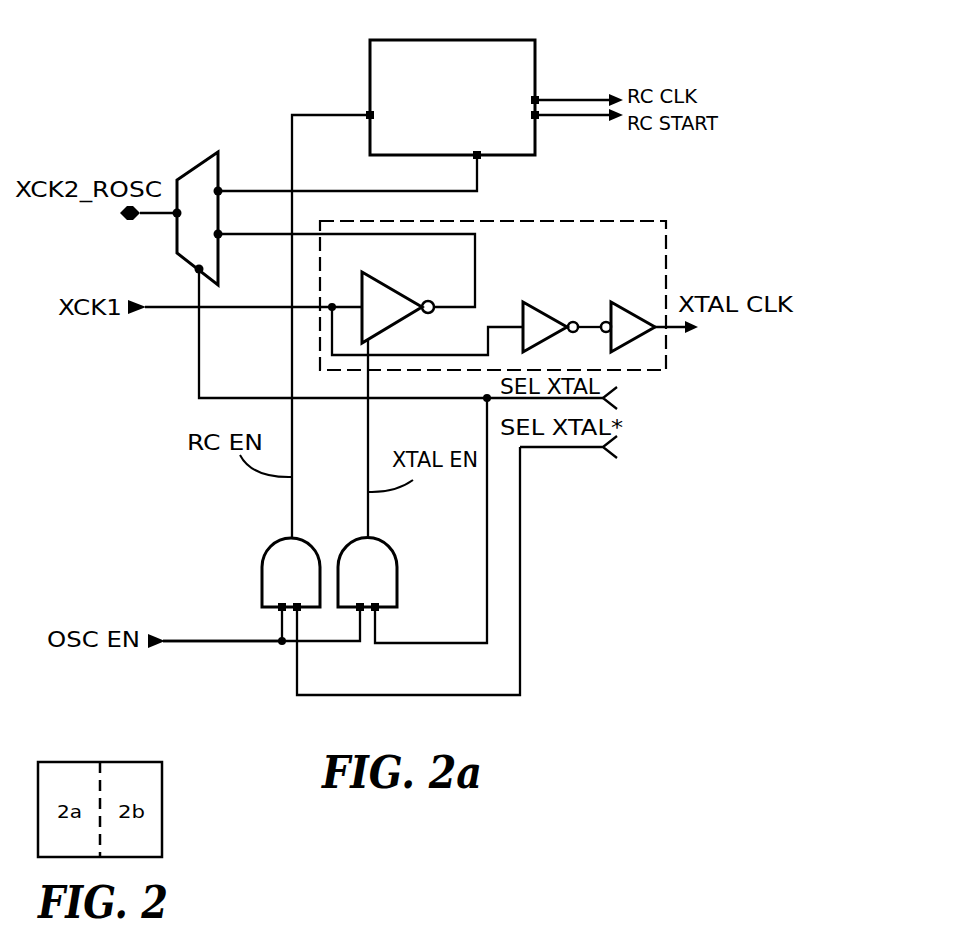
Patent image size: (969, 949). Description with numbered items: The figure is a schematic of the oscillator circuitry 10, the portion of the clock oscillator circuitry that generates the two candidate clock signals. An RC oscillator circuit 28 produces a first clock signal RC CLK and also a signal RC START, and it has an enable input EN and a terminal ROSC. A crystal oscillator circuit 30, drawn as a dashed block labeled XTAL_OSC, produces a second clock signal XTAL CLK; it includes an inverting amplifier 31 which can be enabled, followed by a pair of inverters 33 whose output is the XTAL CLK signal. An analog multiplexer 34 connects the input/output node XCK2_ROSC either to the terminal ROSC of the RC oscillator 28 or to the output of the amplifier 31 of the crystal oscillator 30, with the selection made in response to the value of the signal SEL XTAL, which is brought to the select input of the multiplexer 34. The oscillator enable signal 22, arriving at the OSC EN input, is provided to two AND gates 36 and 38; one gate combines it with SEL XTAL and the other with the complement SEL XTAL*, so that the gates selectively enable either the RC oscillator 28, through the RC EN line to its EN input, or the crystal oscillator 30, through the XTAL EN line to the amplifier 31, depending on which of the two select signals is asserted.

The oscillator circuitry 10 is at (263, 81).
The RC oscillator circuit 28 is at (535, 40).
The analog multiplexer 34 is at (218, 177).
The crystal oscillator circuit 30 is at (640, 221).
The inverting amplifier 31 is at (380, 283).
The pair of inverters 33 is at (607, 310).
The AND gate 36 is at (262, 563).
The AND gate 38 is at (397, 563).
The oscillator enable signal 22 is at (232, 643).